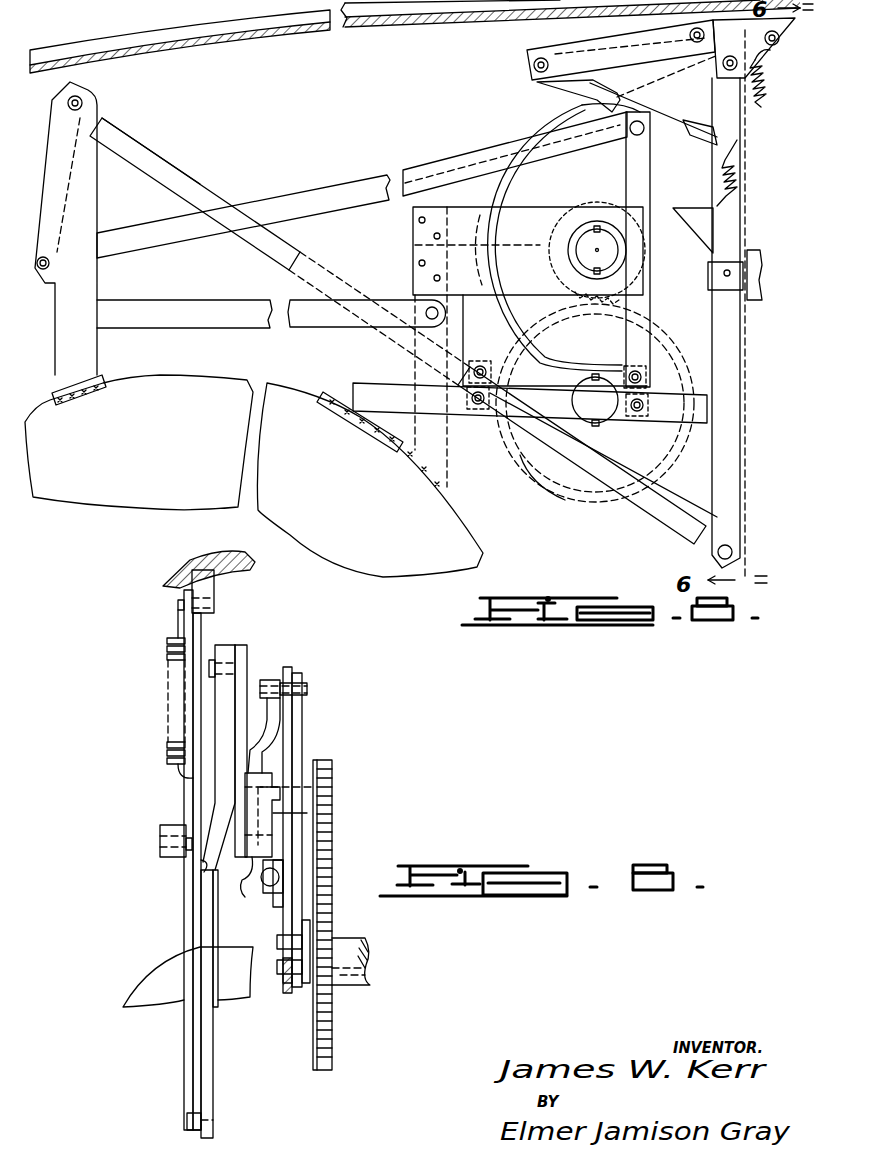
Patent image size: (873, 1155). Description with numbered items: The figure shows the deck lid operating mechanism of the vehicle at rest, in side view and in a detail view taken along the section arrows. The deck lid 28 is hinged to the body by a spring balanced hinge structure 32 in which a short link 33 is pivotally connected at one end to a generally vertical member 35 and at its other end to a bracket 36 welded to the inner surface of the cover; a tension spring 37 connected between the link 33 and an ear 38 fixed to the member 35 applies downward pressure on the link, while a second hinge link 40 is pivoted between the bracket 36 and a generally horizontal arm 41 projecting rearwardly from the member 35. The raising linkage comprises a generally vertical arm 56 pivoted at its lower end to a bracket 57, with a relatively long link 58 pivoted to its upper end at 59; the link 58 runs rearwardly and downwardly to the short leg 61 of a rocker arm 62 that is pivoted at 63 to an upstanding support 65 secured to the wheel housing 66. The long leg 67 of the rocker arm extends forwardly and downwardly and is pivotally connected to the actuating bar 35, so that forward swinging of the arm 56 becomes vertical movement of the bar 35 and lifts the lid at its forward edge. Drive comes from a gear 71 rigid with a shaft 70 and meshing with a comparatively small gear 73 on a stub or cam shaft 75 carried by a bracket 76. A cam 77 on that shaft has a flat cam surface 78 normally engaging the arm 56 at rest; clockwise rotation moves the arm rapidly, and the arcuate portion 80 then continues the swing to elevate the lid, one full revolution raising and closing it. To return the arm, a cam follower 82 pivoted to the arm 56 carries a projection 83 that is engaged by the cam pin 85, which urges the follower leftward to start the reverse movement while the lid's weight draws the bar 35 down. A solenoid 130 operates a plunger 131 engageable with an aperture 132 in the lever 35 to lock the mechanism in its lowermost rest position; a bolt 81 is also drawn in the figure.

In FIG. 5, the deck lid 28 is at (133, 22).
In FIG. 6, the deck lid 28 is at (262, 566).
In FIG. 5, the spring balanced hinge structure 32 is at (757, 114).
In FIG. 5, the short link 33 is at (770, 90).
In FIG. 6, the short link 33 is at (183, 593).
In FIG. 5, the vertical member 35 is at (727, 432).
In FIG. 6, the vertical member 35 is at (193, 808).
In FIG. 5, the bracket 36 is at (713, 15).
In FIG. 6, the bracket 36 is at (215, 590).
In FIG. 5, the tension spring 37 is at (720, 180).
In FIG. 6, the tension spring 37 is at (167, 650).
In FIG. 5, the ear 38 is at (720, 228).
In FIG. 5, the second hinge link 40 is at (595, 45).
In FIG. 5, the horizontal arm 41 is at (653, 87).
In FIG. 5, the vertical arm 56 is at (642, 178).
In FIG. 6, the vertical arm 56 is at (300, 728).
In FIG. 5, the bracket 57 is at (458, 416).
In FIG. 6, the bracket 57 is at (283, 990).
In FIG. 5, the long link 58 is at (433, 167).
In FIG. 6, the long link 58 is at (273, 713).
In FIG. 5, the pivot 59 is at (640, 150).
In FIG. 6, the pivot 59 is at (287, 690).
In FIG. 5, the short leg 61 is at (50, 193).
In FIG. 5, the rocker arm 62 is at (142, 141).
In FIG. 6, the rocker arm 62 is at (241, 751).
In FIG. 5, the pivot 63 is at (87, 97).
In FIG. 5, the upstanding support 65 is at (80, 287).
In FIG. 6, the upstanding support 65 is at (237, 648).
In FIG. 5, the wheel housing 66 is at (200, 380).
In FIG. 6, the wheel housing 66 is at (160, 963).
In FIG. 5, the long leg 67 is at (200, 185).
In FIG. 6, the long leg 67 is at (207, 890).
In FIG. 6, the shaft 70 is at (355, 942).
In FIG. 5, the gear 71 is at (565, 492).
In FIG. 6, the gear 71 is at (333, 1020).
In FIG. 5, the second gear 73 is at (552, 263).
In FIG. 6, the second gear 73 is at (333, 765).
In FIG. 5, the cam shaft 75 is at (608, 255).
In FIG. 5, the bracket 76 is at (413, 266).
In FIG. 6, the bracket 76 is at (247, 890).
In FIG. 5, the cam 77 is at (603, 330).
In FIG. 5, the flat cam surface 78 is at (627, 337).
In FIG. 5, the arcuate portion 80 is at (498, 177).
In FIG. 5, the bolt 81 is at (485, 362).
In FIG. 5, the cam follower 82 is at (533, 122).
In FIG. 6, the cam follower 82 is at (297, 665).
In FIG. 5, the projection 83 is at (413, 243).
In FIG. 5, the cam pin 85 is at (535, 240).
In FIG. 6, the cam pin 85 is at (333, 808).
In FIG. 5, the solenoid 130 is at (726, 300).
In FIG. 6, the solenoid 130 is at (160, 827).
In FIG. 5, the plunger 131 is at (730, 275).
In FIG. 6, the plunger 131 is at (160, 845).
In FIG. 6, the aperture 132 is at (195, 864).